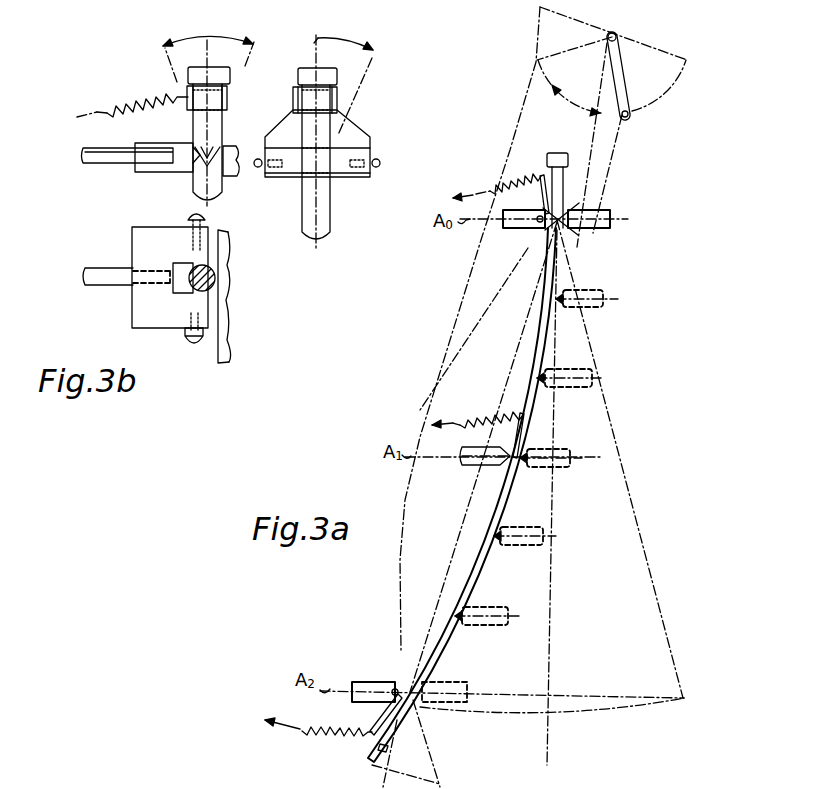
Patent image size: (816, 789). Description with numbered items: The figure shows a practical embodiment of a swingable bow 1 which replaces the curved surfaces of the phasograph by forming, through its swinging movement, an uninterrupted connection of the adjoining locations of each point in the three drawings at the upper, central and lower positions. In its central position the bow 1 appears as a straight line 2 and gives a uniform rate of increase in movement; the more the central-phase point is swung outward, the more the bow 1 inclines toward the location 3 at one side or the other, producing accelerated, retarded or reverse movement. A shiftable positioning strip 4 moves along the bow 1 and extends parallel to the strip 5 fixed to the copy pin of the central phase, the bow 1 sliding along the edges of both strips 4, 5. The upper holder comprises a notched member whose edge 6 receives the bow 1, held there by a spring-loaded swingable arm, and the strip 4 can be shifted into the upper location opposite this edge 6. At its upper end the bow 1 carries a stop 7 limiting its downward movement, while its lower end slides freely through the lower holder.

In FIG. 3B, the swingable bow 1 is at (318, 240).
In FIG. 3A, the swingable bow 1 is at (627, 93).
In FIG. 3A, the straight line (axis) 2 is at (602, 88).
In FIG. 3A, the location 3 is at (575, 56).
In FIG. 3B, the shiftable positioning strip 4 is at (242, 177).
In FIG. 3A, the shiftable positioning strip 4 is at (620, 172).
In FIG. 3A, the strip 5 is at (470, 452).
In FIG. 3B, the edge 6 is at (182, 162).
In FIG. 3A, the edge 6 is at (540, 212).
In FIG. 3B, the stop 7 is at (218, 78).